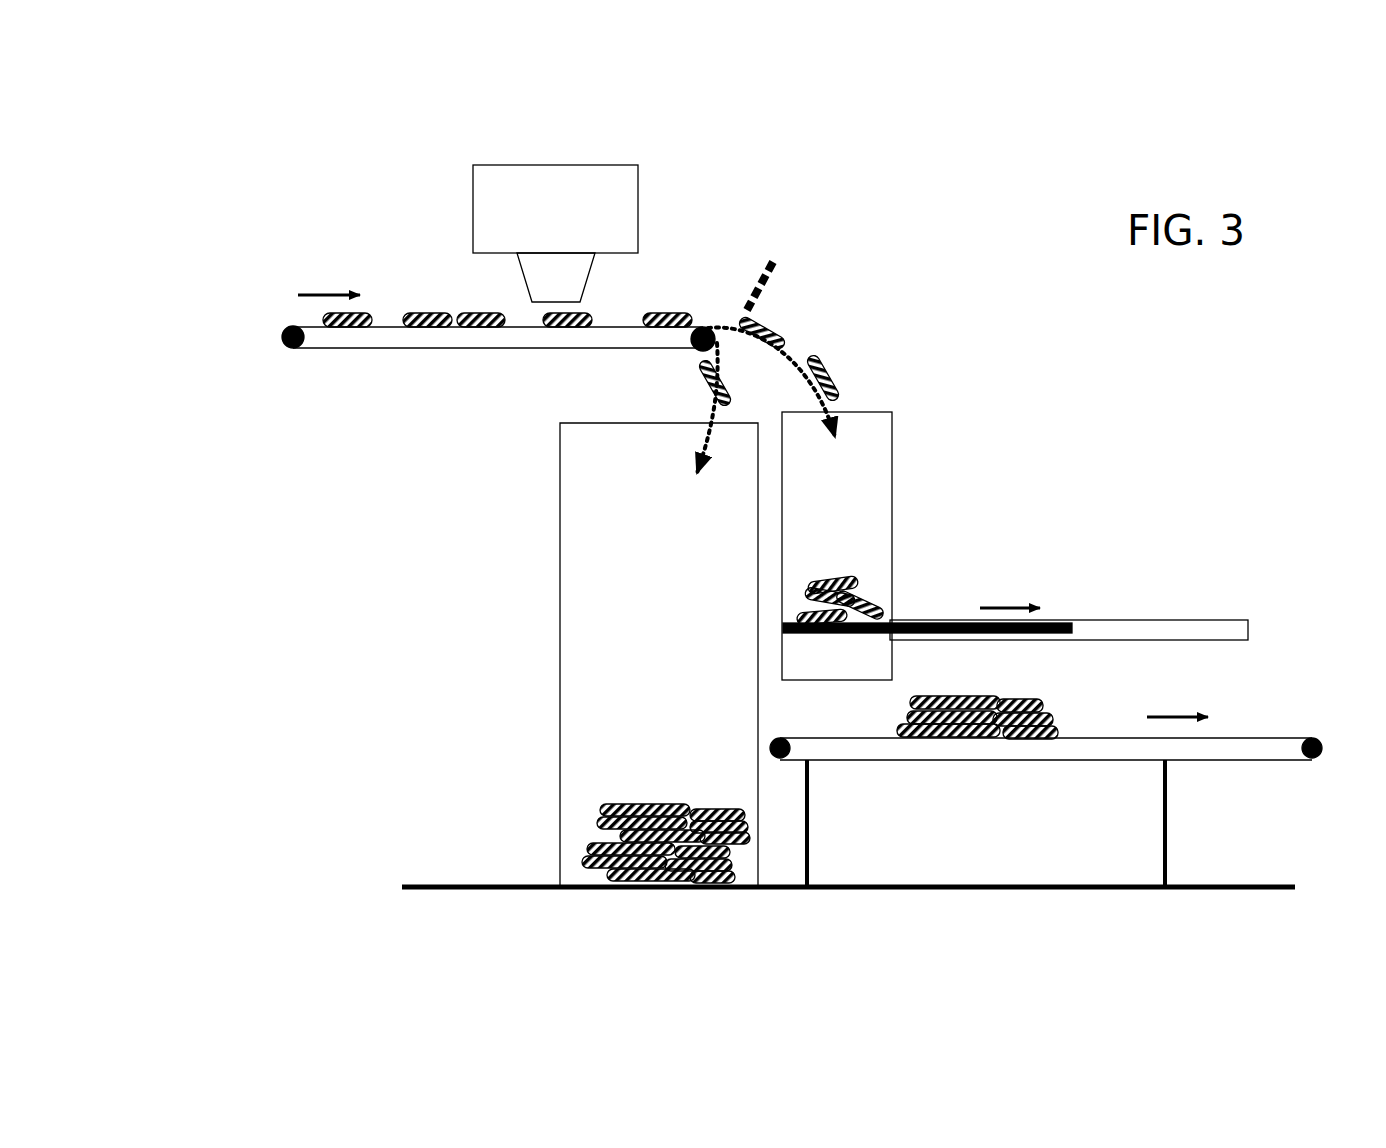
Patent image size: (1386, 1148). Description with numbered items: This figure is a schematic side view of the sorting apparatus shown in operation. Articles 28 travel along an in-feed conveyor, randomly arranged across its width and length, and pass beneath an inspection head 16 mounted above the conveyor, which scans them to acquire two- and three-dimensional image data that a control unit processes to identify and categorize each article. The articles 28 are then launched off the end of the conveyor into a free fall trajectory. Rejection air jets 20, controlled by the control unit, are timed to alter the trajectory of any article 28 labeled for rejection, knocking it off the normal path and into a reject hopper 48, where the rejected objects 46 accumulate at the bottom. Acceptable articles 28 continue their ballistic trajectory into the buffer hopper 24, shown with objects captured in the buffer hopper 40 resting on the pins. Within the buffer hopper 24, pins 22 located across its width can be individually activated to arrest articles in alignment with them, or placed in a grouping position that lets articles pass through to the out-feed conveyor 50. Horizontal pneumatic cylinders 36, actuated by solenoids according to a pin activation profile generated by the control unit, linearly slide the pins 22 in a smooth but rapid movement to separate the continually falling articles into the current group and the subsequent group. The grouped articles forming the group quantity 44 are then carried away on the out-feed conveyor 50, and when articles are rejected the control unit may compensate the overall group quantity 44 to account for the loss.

The inspection head 16 is at (489, 190).
The articles 28 is at (425, 312).
The rejection air jets 20 is at (378, 337).
The buffer hopper 24 is at (832, 357).
The reject hopper 48 is at (620, 613).
The rejected objects 46 is at (590, 798).
The buffer hopper 40 is at (835, 577).
The pins 22 is at (945, 625).
The horizontal pneumatic cylinders 36 is at (1123, 635).
The group quantity 44 is at (1060, 727).
The out-feed conveyor 50 is at (1223, 742).